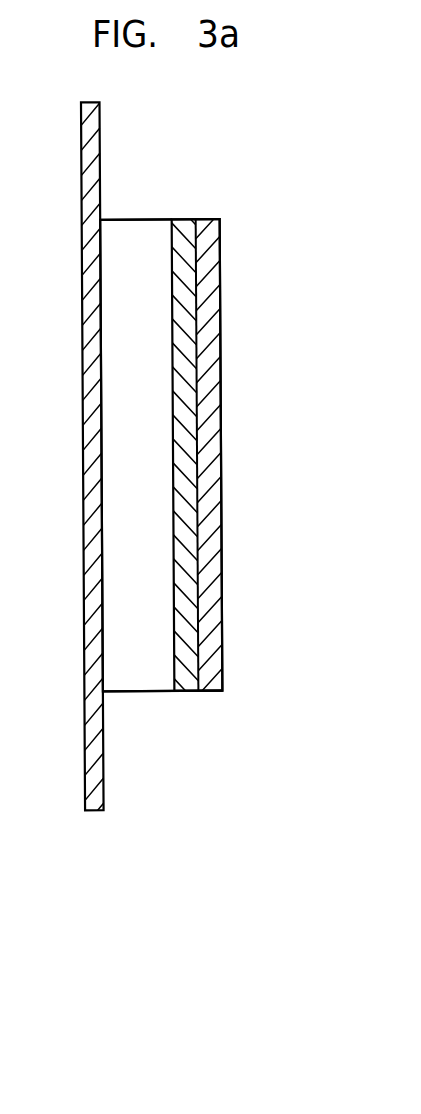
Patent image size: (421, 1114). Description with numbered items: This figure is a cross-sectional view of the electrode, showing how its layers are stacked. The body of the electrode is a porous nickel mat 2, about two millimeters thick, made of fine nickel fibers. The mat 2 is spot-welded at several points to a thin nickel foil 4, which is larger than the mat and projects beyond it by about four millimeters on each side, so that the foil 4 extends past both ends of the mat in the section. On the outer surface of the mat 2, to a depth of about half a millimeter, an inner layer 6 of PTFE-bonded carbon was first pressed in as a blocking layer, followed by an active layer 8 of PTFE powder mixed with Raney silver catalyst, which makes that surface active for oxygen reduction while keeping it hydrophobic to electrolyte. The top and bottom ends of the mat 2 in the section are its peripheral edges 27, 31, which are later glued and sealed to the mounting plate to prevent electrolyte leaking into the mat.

The nickel mat 2 is at (143, 413).
The nickel foil 4 is at (83, 202).
The inner layer 6 is at (183, 684).
The active layer 8 is at (209, 310).
The peripheral edge 27 is at (133, 219).
The peripheral edge 31 is at (128, 692).